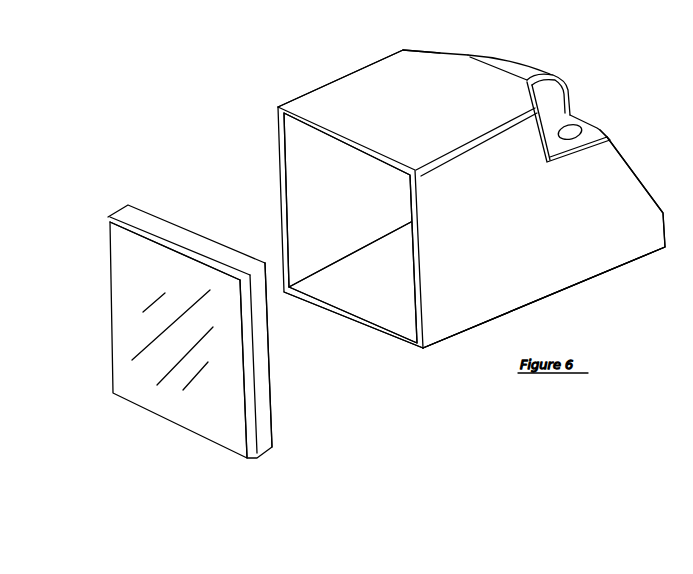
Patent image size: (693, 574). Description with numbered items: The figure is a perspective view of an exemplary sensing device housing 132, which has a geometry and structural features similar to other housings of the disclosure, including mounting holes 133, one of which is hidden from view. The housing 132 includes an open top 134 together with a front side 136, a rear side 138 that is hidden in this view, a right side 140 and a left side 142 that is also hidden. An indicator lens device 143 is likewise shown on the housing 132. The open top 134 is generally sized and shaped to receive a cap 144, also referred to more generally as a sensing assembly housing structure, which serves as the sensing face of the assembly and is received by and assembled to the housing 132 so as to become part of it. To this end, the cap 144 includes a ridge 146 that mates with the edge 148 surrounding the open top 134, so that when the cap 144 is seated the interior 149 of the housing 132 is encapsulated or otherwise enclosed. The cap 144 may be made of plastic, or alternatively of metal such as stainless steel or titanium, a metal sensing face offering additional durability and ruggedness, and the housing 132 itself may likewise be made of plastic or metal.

The sensing device housing 132 is at (335, 93).
The mounting holes 133 is at (577, 123).
The open top 134 is at (307, 155).
The front side 136 is at (433, 118).
The rear side 138 is at (567, 297).
The right side 140 is at (513, 239).
The left side 142 is at (352, 54).
The indicator lens device 143 is at (534, 69).
The cap 144 is at (163, 405).
The ridge 146 is at (260, 360).
The edge 148 is at (398, 349).
The interior 149 is at (367, 225).